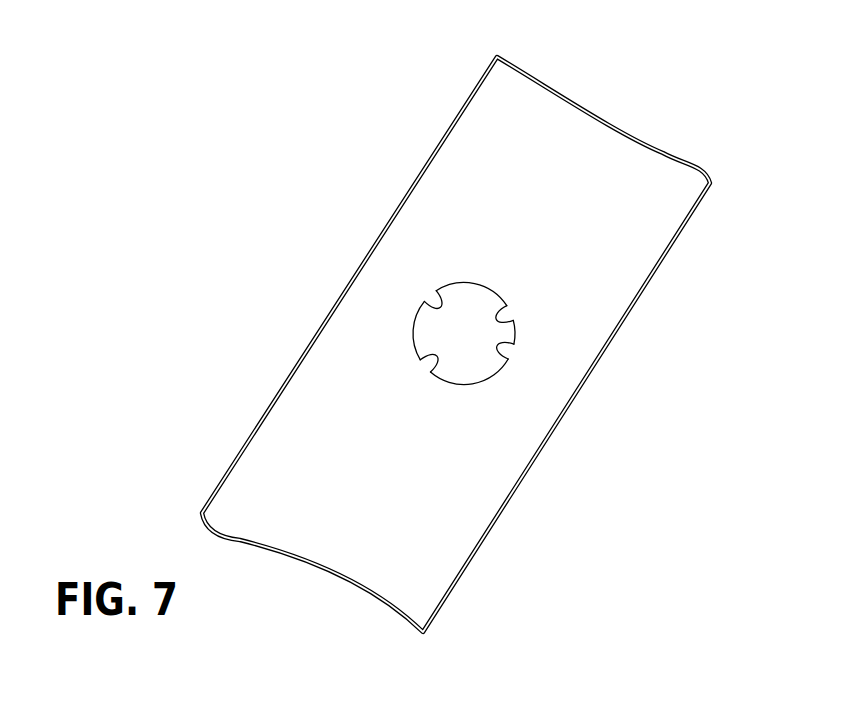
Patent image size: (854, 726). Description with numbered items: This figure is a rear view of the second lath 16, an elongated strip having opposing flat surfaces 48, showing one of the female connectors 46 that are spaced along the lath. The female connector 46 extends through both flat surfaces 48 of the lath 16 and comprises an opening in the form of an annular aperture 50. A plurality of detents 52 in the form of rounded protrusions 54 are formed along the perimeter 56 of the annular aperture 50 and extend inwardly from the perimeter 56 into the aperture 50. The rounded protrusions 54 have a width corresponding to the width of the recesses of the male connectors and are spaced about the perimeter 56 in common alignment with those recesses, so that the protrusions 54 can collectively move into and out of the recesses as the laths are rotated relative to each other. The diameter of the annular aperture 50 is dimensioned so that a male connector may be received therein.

The second lath 16 is at (303, 205).
The flat surfaces 48 is at (488, 128).
The female connectors 46 is at (410, 328).
The annular aperture 50 is at (473, 357).
The detents 52 is at (433, 383).
The rounded protrusions 54 is at (445, 288).
The perimeter 56 is at (513, 325).